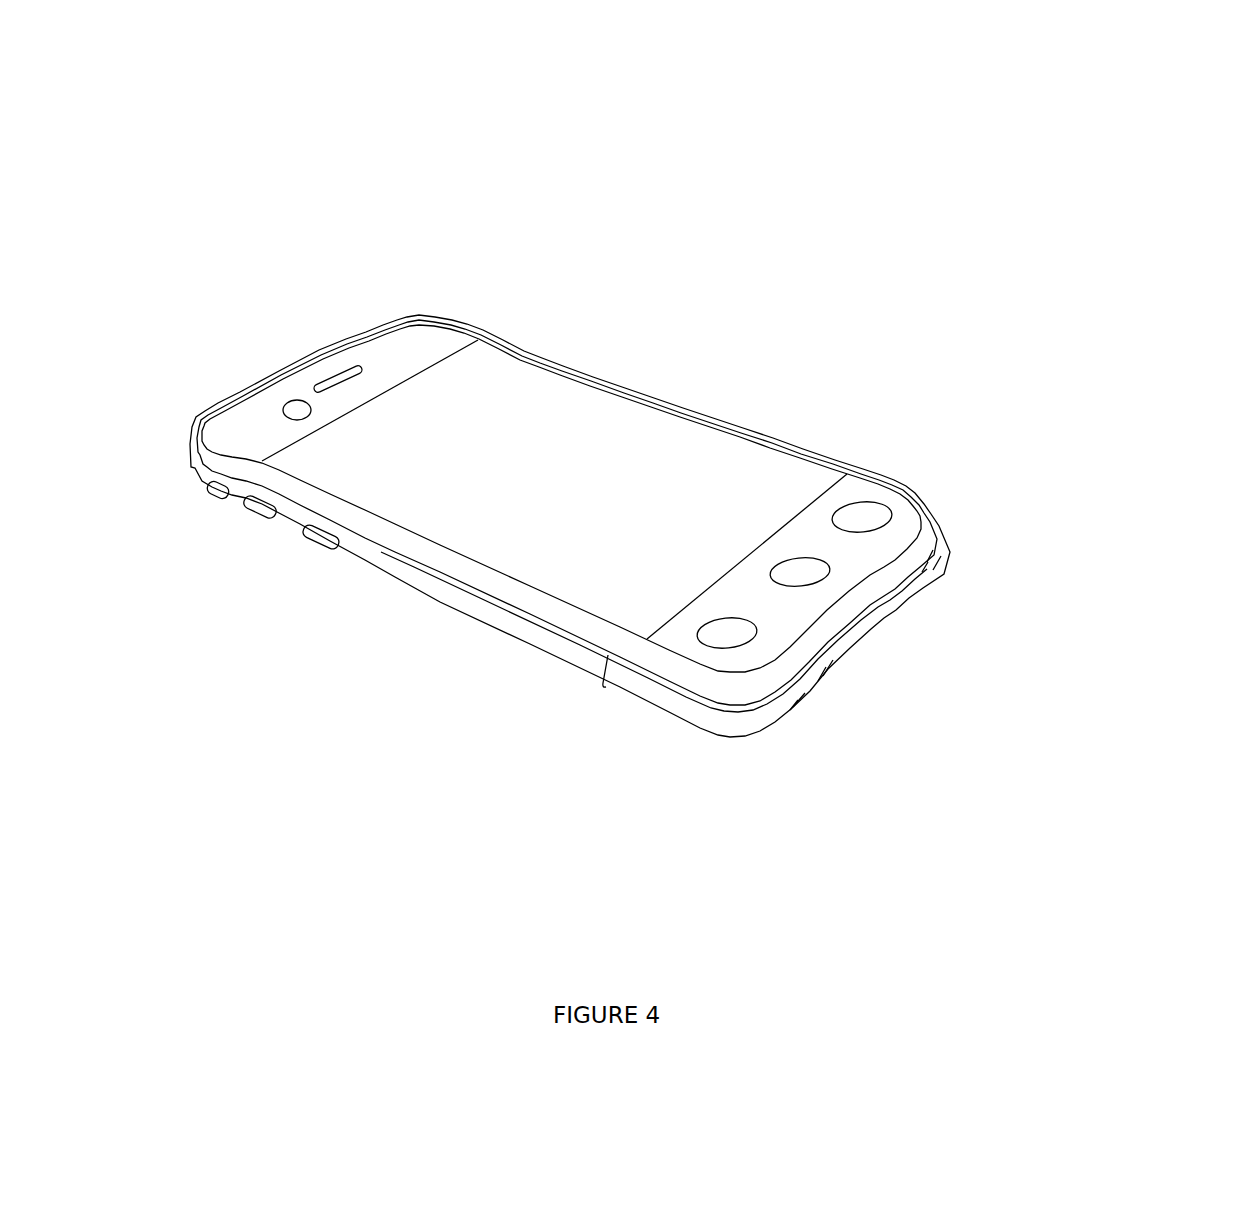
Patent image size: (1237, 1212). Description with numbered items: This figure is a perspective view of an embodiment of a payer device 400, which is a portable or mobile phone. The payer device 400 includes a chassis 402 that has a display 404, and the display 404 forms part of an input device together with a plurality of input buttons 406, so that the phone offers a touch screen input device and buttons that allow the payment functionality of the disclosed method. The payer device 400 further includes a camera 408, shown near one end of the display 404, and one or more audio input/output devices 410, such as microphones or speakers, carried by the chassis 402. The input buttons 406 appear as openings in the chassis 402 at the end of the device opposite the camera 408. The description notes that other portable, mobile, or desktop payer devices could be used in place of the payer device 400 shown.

The payer device 400 is at (1130, 201).
The chassis 402 is at (738, 722).
The display 404 is at (513, 475).
The input buttons 406 is at (740, 630).
The camera 408 is at (297, 410).
The audio input/output devices 410 is at (945, 560).